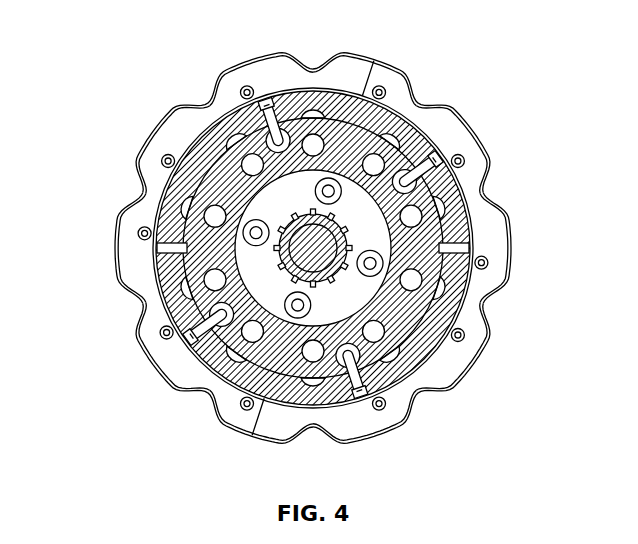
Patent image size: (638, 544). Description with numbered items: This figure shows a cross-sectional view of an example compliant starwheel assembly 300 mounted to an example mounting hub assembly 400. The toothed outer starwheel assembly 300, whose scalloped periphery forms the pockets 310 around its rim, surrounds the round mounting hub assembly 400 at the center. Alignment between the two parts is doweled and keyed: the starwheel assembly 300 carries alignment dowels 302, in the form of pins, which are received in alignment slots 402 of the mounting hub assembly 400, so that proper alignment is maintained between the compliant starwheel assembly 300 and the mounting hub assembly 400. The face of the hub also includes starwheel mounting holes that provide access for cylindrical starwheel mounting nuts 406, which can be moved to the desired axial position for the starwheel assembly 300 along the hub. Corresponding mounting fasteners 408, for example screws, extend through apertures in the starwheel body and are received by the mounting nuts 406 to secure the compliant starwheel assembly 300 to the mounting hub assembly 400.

The compliant starwheel assembly 300 is at (504, 246).
The sprocket tooth 310 is at (335, 42).
The alignment dowels 302 is at (462, 247).
The mounting hub assembly 400 is at (240, 348).
The alignment slots 402 is at (440, 214).
The starwheel mounting nuts 406 is at (283, 140).
The mounting fasteners 408 is at (262, 100).